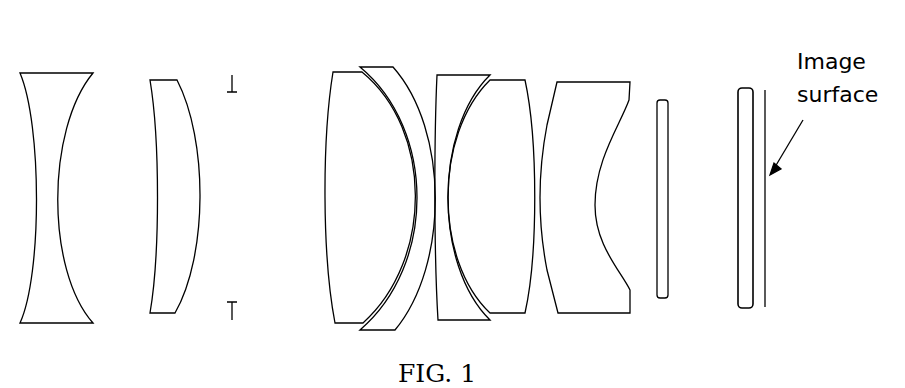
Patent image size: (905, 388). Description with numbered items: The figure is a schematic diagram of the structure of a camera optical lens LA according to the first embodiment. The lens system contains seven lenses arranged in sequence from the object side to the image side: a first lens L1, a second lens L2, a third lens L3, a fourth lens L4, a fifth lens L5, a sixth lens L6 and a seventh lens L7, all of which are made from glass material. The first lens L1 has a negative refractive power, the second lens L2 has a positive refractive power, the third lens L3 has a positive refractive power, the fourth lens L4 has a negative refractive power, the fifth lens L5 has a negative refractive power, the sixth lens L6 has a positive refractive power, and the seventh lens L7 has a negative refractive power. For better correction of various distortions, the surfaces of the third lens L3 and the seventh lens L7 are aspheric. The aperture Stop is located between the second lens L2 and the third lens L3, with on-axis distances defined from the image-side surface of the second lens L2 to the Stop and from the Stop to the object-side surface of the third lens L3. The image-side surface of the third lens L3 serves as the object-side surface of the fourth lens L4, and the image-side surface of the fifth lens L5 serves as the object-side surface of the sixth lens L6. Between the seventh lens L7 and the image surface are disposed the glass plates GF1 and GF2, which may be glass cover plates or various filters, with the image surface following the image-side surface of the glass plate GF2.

The first lens L1 is at (56, 187).
The second lens L2 is at (175, 186).
The third lens L3 is at (370, 189).
The fourth lens L4 is at (397, 188).
The fifth lens L5 is at (462, 187).
The sixth lens L6 is at (491, 187).
The seventh lens L7 is at (585, 186).
The glass plate GF1 is at (663, 188).
The glass plate GF2 is at (743, 188).
The aperture Stop is at (240, 85).